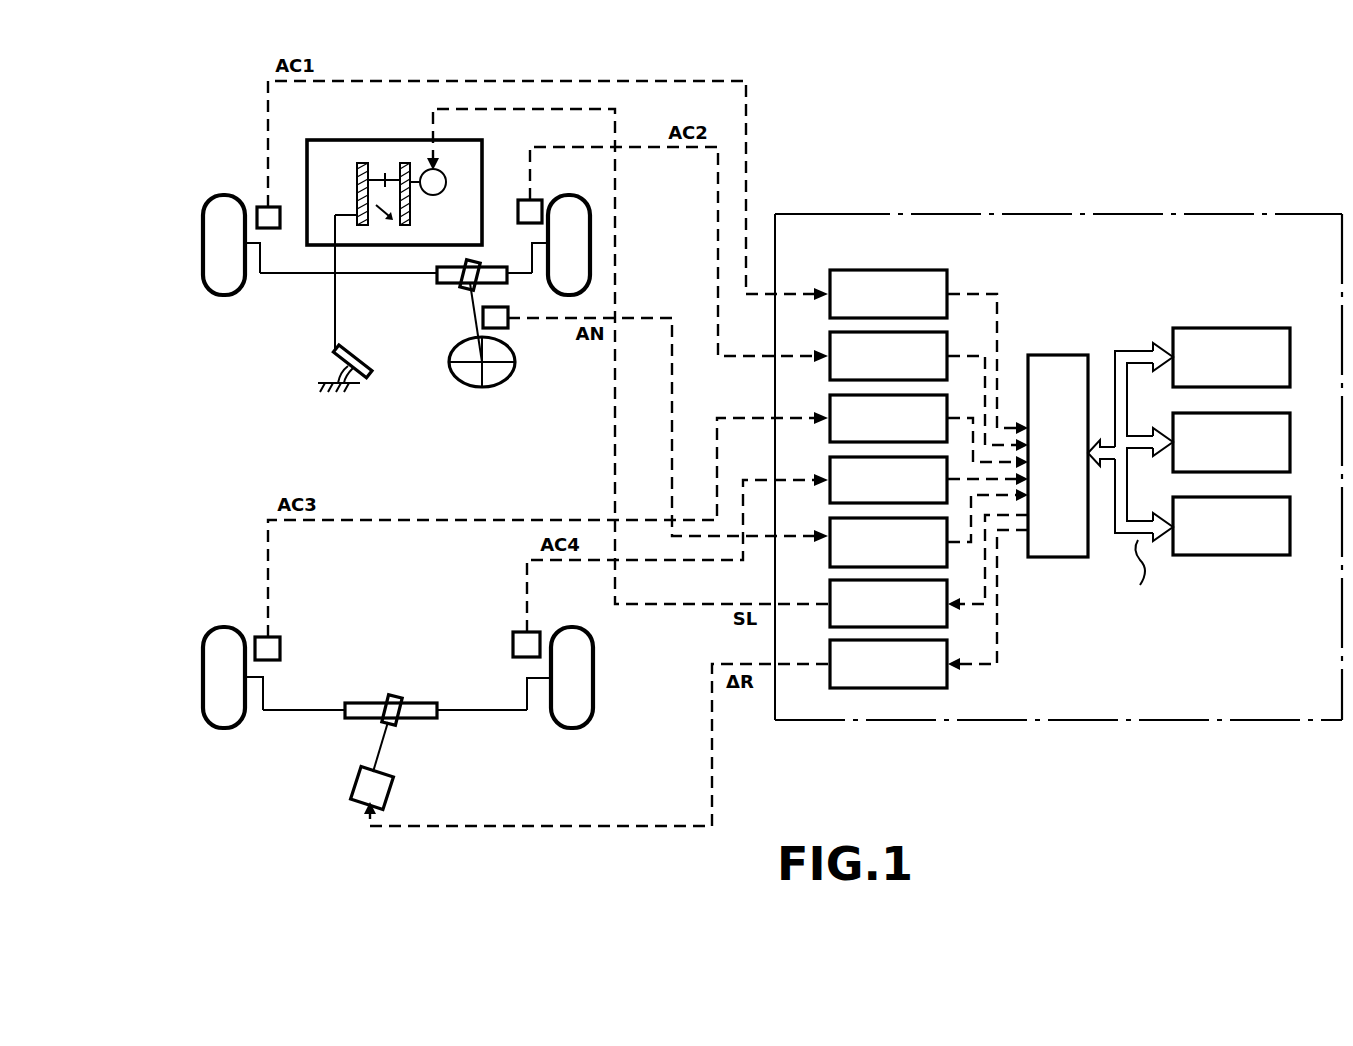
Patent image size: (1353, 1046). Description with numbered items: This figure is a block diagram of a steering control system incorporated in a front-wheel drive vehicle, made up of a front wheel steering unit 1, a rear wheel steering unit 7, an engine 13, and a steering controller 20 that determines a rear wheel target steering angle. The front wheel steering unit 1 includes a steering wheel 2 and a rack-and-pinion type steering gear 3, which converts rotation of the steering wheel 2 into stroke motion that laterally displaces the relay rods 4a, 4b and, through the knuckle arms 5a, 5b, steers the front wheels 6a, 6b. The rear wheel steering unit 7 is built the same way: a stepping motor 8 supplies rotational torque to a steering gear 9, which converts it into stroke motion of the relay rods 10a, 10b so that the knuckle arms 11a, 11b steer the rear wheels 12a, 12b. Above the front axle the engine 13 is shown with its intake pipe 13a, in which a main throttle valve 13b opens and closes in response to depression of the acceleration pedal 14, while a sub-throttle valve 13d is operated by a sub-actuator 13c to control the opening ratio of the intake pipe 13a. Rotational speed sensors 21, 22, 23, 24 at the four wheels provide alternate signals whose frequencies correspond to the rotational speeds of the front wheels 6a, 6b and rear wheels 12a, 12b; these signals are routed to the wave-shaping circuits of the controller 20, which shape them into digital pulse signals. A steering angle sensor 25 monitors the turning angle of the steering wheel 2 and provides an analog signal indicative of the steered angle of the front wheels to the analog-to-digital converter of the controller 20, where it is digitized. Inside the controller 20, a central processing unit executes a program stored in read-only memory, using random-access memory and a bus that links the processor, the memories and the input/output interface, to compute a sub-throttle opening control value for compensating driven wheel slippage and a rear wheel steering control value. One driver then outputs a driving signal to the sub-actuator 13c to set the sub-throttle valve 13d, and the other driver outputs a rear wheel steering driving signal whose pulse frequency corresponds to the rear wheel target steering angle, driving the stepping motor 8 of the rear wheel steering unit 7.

The front wheel steering unit 1 is at (499, 72).
The steering wheel 2 is at (452, 372).
The steering gear 3 is at (444, 285).
The relay rod 4a is at (300, 277).
The relay rod 4b is at (526, 270).
The knuckle arm 5a is at (262, 262).
The knuckle arm 5b is at (537, 275).
The front wheel 6a is at (214, 193).
The front wheel 6b is at (580, 193).
The rear wheel steering unit 7 is at (316, 779).
The stepping motor 8 is at (393, 782).
The steering gear 9 is at (428, 702).
The relay rod 10a is at (320, 708).
The relay rod 10b is at (488, 712).
The knuckle arm 11a is at (260, 712).
The knuckle arm 11b is at (540, 712).
The rear wheel 12a is at (222, 626).
The rear wheel 12b is at (592, 632).
The engine 13 is at (394, 184).
The intake pipe 13a is at (408, 222).
The main throttle valve 13b is at (378, 222).
The sub-actuator 13c is at (447, 186).
The sub-throttle valve 13d is at (367, 162).
The acceleration pedal 14 is at (351, 350).
The steering controller 20 is at (826, 212).
The rotational speed sensor 21 is at (272, 206).
The rotational speed sensor 22 is at (518, 200).
The rotational speed sensor 23 is at (278, 636).
The rotational speed sensor 24 is at (513, 634).
The steering angle sensor 25 is at (512, 326).